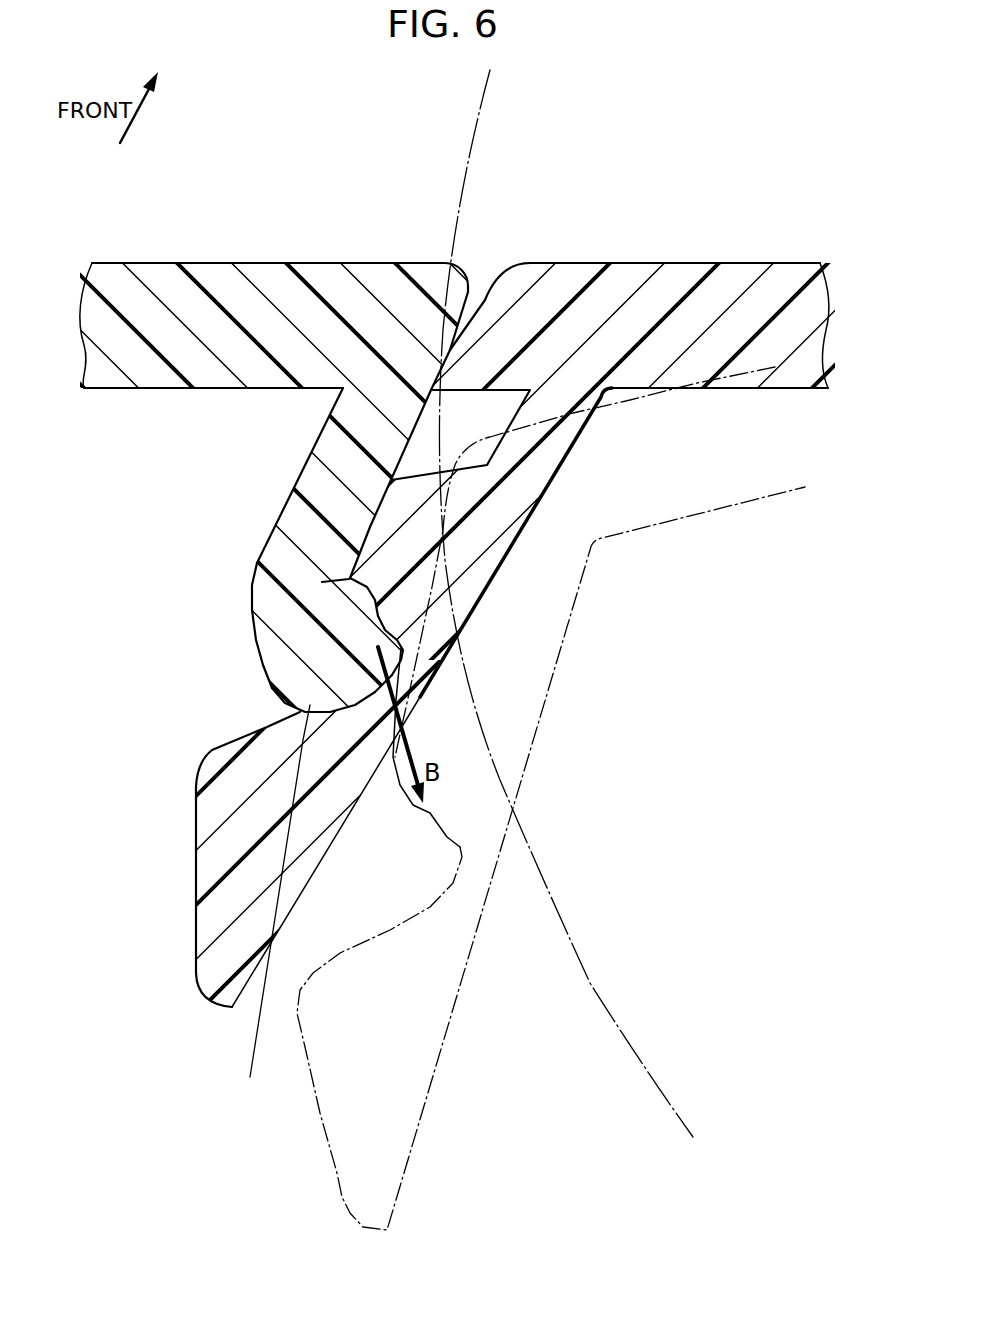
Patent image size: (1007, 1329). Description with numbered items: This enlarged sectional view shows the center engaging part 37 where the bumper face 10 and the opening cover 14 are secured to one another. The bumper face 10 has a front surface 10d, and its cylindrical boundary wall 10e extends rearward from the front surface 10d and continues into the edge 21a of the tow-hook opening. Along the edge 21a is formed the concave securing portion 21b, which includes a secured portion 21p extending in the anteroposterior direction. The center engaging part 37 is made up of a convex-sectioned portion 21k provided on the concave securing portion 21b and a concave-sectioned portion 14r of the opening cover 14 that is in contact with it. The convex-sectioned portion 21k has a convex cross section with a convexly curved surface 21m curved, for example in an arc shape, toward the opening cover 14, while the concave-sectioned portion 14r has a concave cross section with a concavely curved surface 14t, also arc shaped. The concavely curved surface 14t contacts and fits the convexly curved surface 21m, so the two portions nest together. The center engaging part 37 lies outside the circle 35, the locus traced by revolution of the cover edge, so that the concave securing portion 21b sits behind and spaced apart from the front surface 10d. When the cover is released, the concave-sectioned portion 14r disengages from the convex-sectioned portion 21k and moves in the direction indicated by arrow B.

The bumper face 10 is at (217, 263).
The front surface of the bumper face 10d is at (384, 262).
The cylindrical boundary wall 10e is at (310, 487).
The opening cover 14 is at (632, 262).
The concave-sectioned portion 14r is at (370, 576).
The concavely curved surface 14t is at (362, 629).
The edge of the tow-hook opening 21a is at (265, 692).
The concave securing portion 21b is at (348, 578).
The convex-sectioned portion 21k is at (330, 598).
The convexly curved surface 21m is at (373, 597).
The secured portion 21p is at (310, 720).
The circle 35 is at (590, 983).
The center engaging part 37 is at (272, 906).